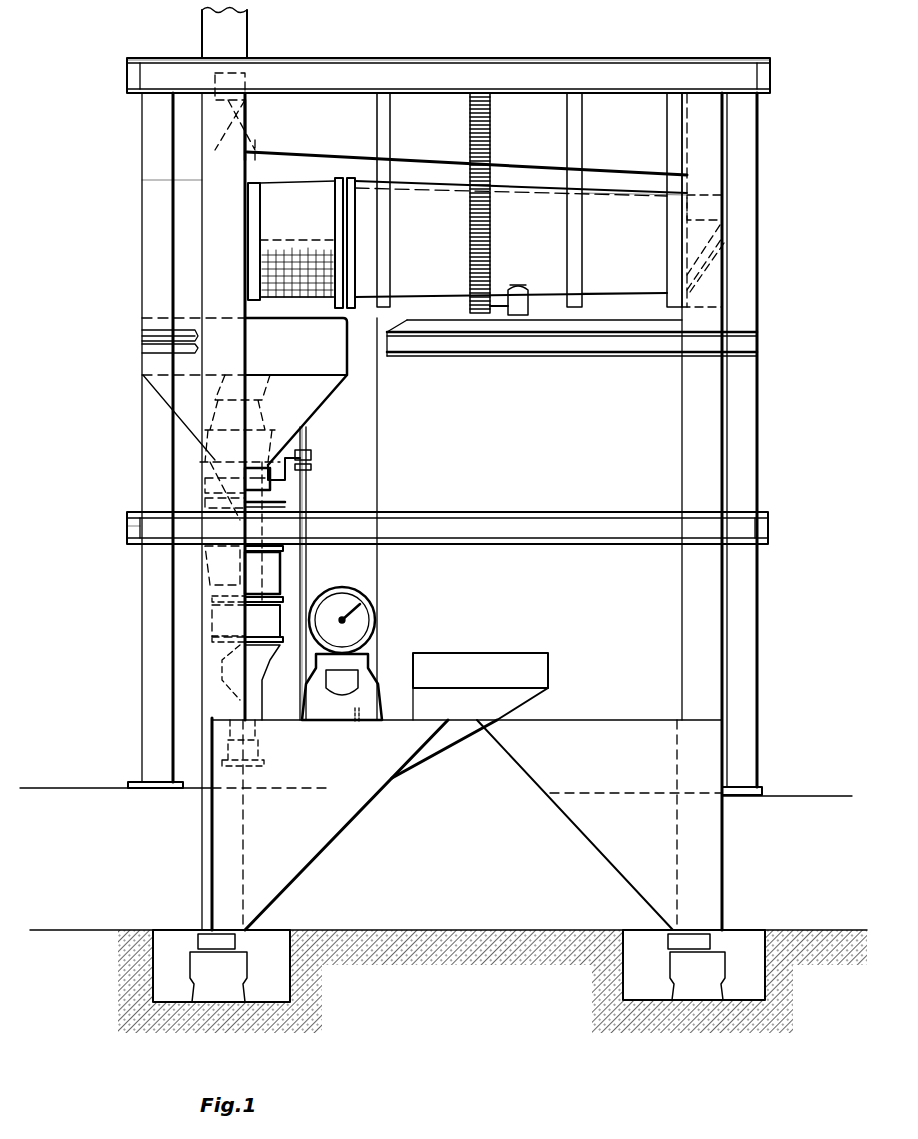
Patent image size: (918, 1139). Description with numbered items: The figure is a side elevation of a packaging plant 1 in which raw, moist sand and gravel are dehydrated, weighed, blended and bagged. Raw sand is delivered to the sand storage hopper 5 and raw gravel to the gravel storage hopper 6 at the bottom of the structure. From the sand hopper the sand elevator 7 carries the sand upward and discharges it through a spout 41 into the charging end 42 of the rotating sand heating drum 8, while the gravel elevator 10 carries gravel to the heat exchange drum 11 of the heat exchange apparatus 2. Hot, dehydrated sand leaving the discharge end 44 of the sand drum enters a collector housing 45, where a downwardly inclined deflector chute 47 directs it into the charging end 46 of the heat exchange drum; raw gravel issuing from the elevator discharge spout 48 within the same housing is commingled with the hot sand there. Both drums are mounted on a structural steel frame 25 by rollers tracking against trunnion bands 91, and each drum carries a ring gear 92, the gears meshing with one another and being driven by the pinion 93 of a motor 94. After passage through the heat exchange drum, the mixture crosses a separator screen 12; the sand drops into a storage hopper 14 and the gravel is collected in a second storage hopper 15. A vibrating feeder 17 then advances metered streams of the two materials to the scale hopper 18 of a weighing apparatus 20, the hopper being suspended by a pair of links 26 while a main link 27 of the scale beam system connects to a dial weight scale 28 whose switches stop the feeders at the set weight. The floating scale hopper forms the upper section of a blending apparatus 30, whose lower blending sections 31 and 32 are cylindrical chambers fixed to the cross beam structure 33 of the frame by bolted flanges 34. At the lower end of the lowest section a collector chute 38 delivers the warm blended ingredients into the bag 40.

The packaging plant 1 is at (436, 40).
The heat exchange apparatus 2 is at (645, 152).
The sand storage hopper 5 is at (298, 860).
The gravel storage hopper 6 is at (612, 858).
The sand elevator 7 is at (205, 188).
The sand heating drum 8 is at (517, 111).
The gravel elevator 10 is at (705, 414).
The heat exchange drum 11 is at (618, 270).
The separator screen 12 is at (292, 176).
The sand storage hopper 14 is at (316, 404).
The gravel storage hopper 15 is at (158, 395).
The vibrating feeder 17 is at (270, 478).
The scale hopper 18 is at (270, 506).
The weighing apparatus 20 is at (310, 438).
The structural steel frame 25 is at (142, 262).
The links 26 is at (235, 492).
The main link 27 is at (305, 570).
The weight scale 28 is at (352, 617).
The blending apparatus 30 is at (260, 570).
The blending section 31 is at (215, 576).
The blending section 32 is at (222, 622).
The cross beam structure 33 is at (126, 530).
The flanges 34 is at (285, 546).
The collector chute 38 is at (241, 682).
The bag 40 is at (262, 752).
The spout 41 is at (228, 118).
The charging end 42 is at (240, 155).
The discharge end 44 is at (678, 137).
The collector housing 45 is at (686, 186).
The charging end 46 is at (695, 240).
The deflector chute 47 is at (705, 268).
The elevator discharge spout 48 is at (710, 205).
The trunnion bands 91 is at (390, 140).
The ring gear 92 is at (491, 130).
The pinion 93 is at (470, 307).
The motor 94 is at (528, 300).